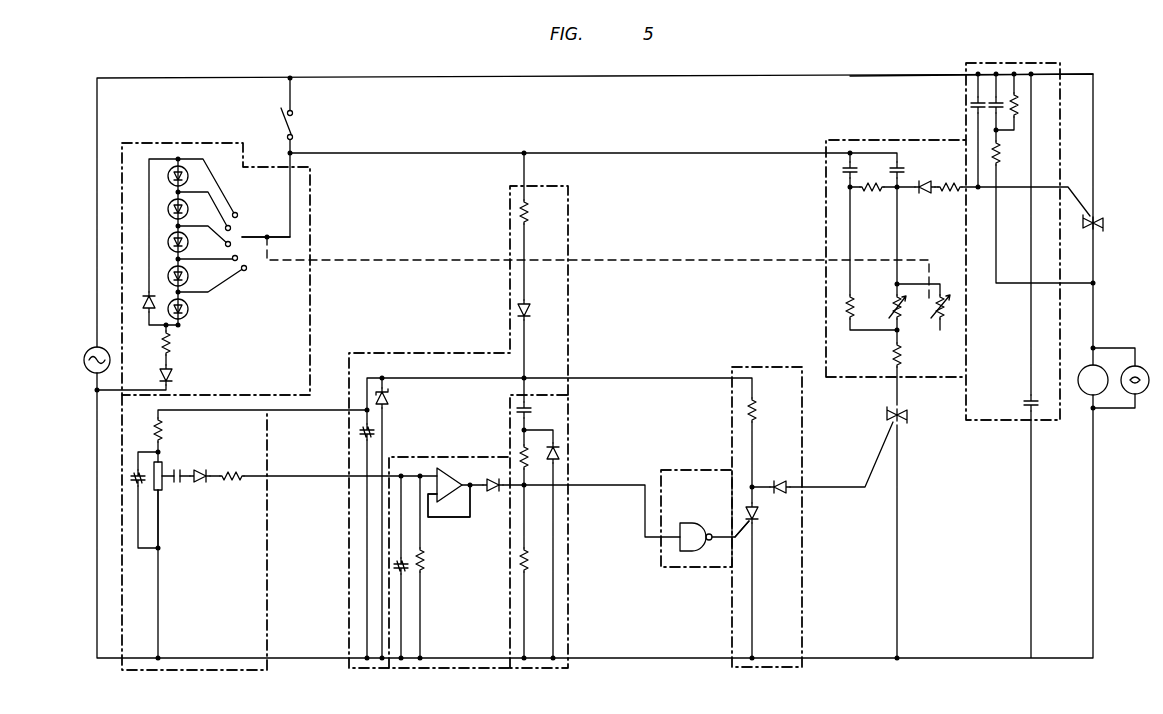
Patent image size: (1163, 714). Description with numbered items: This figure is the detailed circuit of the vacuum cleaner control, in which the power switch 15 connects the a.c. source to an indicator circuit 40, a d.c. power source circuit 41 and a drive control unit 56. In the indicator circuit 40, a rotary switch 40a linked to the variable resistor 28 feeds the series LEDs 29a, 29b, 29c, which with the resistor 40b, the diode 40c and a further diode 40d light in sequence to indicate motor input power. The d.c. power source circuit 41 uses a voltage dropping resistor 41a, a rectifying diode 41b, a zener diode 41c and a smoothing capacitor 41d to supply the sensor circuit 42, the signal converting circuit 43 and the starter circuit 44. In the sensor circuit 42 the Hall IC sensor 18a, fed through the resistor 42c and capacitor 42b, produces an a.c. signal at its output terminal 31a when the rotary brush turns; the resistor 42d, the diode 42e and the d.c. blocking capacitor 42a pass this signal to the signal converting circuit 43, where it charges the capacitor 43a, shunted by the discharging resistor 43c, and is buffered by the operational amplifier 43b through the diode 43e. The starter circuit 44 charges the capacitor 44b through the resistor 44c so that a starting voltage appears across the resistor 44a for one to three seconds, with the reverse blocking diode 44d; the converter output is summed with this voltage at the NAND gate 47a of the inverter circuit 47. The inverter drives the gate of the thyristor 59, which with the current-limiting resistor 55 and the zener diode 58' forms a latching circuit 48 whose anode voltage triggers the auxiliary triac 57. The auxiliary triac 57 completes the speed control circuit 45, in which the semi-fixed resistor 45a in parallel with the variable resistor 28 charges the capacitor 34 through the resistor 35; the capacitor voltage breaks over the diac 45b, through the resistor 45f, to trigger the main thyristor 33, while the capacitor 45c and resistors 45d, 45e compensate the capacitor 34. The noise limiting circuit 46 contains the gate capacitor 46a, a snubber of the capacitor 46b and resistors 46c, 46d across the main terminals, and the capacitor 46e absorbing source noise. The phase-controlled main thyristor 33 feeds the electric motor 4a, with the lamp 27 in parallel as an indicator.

The power switch 15 is at (296, 128).
The LED 29a is at (188, 309).
The LED 29b is at (168, 276).
The LED 29c is at (168, 242).
The indicator circuit 40 is at (310, 288).
The rotary switch 40a is at (250, 237).
The resistor 40b is at (170, 343).
The diode 40c is at (172, 375).
The diode 40d is at (143, 302).
The sensor circuit 42 is at (268, 565).
The d.c. blocking capacitor 42a is at (178, 484).
The capacitor 42b is at (132, 478).
The resistor 42c is at (152, 430).
The resistor 42d is at (232, 482).
The diode 42e is at (205, 472).
The sensor 18a is at (163, 478).
The output terminal 31a is at (163, 492).
The d.c. power source circuit 41 is at (569, 276).
The voltage dropping resistor 41a is at (530, 212).
The diode 41b is at (531, 310).
The zener diode 41c is at (388, 398).
The smoothing capacitor 41d is at (372, 432).
The signal converting circuit 43 is at (435, 456).
The capacitor 43a is at (405, 569).
The operational amplifier 43b is at (448, 516).
The discharging resistor 43c is at (425, 560).
The diode 43e is at (493, 491).
The starter circuit 44 is at (560, 393).
The resistor 44a is at (531, 560).
The capacitor 44b is at (531, 410).
The resistor 44c is at (531, 457).
The reverse blocking diode 44d is at (559, 453).
The inverter circuit 47 is at (676, 470).
The NAND gate 47a is at (694, 523).
The latching circuit 48 is at (752, 367).
The current-limiting resistor 55 is at (758, 413).
The auxiliary triac 57 is at (907, 415).
The zener diode 58' is at (776, 470).
The thyristor 59 is at (758, 520).
The resistor 35 is at (902, 355).
The speed control circuit 45 is at (826, 140).
The semi-fixed resistor 45a is at (894, 306).
The diac 45b is at (925, 193).
The capacitor 45c is at (856, 170).
The resistor 45d is at (872, 193).
The resistor 45e is at (848, 318).
The resistor 45f is at (946, 181).
The capacitor 34 is at (896, 165).
The noise limiting circuit 46 is at (1034, 63).
The capacitor 46a is at (972, 107).
The capacitor 46b is at (992, 103).
The resistor 46c is at (1020, 105).
The resistor 46d is at (1002, 153).
The capacitor 46e is at (1028, 403).
The drive control unit 56 is at (935, 63).
The main thyristor 33 is at (1103, 223).
The electric motor 4a is at (1083, 368).
The lamp 27 is at (1135, 366).
The variable resistor 28 is at (950, 311).